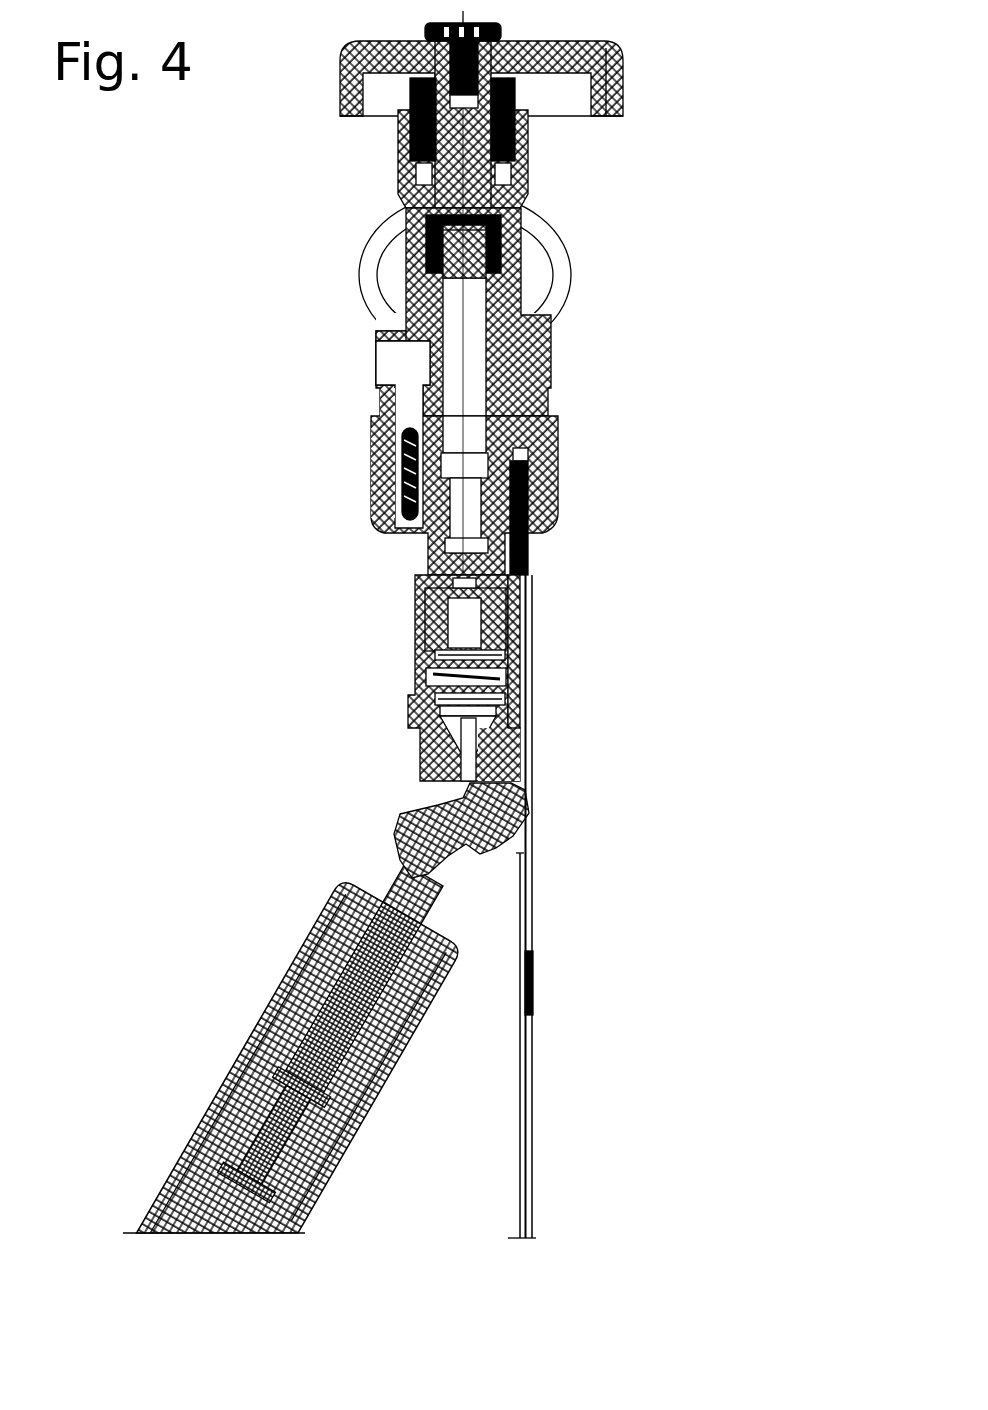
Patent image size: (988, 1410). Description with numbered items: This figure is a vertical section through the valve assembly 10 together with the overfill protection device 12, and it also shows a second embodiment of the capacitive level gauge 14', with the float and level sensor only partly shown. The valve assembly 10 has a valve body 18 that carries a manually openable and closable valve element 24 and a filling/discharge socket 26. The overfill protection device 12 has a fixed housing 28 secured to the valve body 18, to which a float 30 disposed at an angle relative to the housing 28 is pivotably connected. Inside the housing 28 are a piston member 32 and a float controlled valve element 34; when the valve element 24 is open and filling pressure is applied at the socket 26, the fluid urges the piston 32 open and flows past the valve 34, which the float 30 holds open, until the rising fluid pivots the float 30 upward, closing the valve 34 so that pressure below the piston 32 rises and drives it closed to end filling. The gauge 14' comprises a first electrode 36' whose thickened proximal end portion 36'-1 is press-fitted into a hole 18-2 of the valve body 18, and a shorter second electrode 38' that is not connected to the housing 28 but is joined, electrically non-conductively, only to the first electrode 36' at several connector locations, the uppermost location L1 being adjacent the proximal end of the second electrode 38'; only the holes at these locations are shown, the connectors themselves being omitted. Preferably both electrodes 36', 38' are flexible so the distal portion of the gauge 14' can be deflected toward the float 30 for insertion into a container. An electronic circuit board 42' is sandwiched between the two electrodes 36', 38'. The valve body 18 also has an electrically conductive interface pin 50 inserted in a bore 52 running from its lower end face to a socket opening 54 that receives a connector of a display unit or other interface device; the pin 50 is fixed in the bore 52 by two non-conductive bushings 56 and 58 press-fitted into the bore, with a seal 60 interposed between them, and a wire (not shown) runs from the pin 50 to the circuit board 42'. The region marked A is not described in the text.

The valve assembly 10 is at (519, 419).
The overfill protection device 12 is at (326, 1043).
The capacitive level gauge 14' is at (663, 906).
The valve body 18 is at (455, 395).
The hole 18-2 is at (516, 441).
The valve element 24 is at (510, 255).
The filling/discharge socket 26 is at (548, 217).
The housing 28 is at (501, 701).
The float 30 is at (290, 975).
The piston member 32 is at (500, 592).
The float controlled valve element 34 is at (505, 727).
The first electrode 36' is at (601, 906).
The thickened proximal end portion 36'-1 is at (609, 518).
The second electrode 38' is at (468, 1045).
The electronic circuit board 42' is at (611, 989).
The interface pin 50 is at (440, 458).
The bore 52 is at (405, 527).
The socket opening 54 is at (380, 350).
The non-conductive bushing 56 is at (362, 423).
The non-conductive bushing 58 is at (370, 485).
The seal 60 is at (365, 435).
The region A is at (400, 300).
The connector location L1 is at (601, 880).